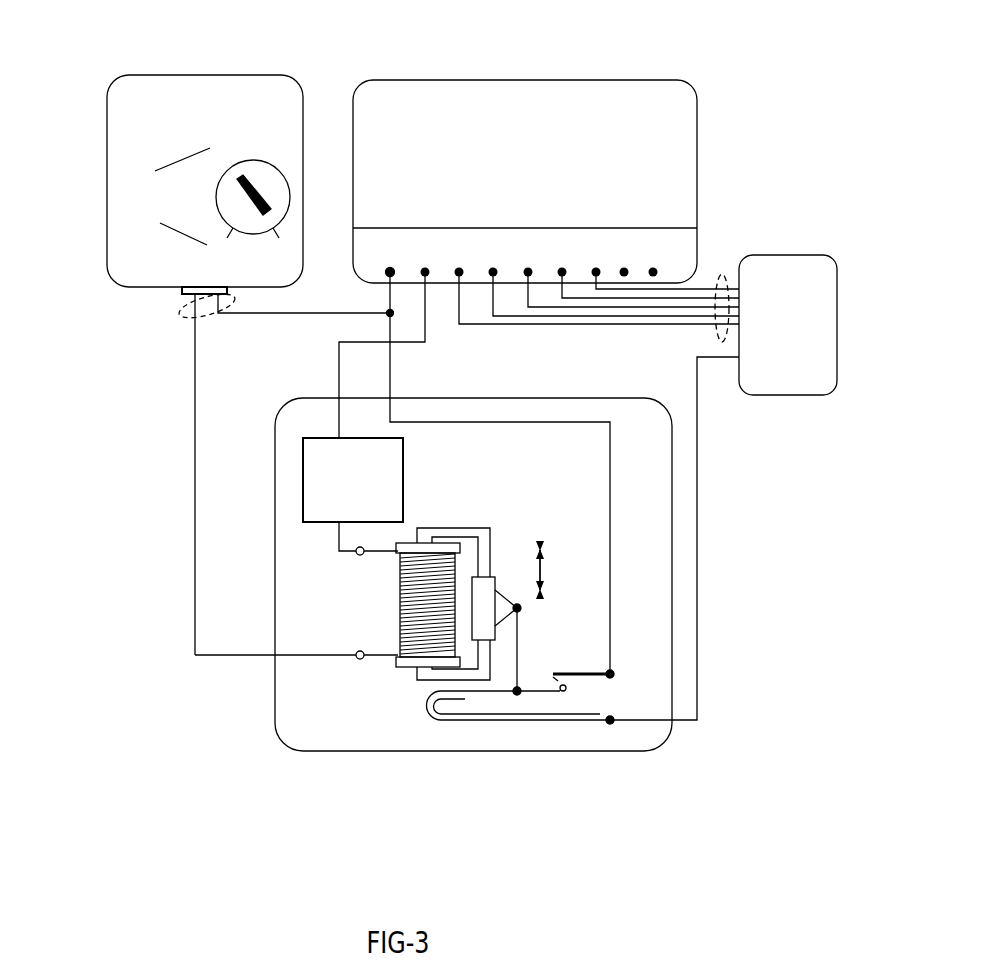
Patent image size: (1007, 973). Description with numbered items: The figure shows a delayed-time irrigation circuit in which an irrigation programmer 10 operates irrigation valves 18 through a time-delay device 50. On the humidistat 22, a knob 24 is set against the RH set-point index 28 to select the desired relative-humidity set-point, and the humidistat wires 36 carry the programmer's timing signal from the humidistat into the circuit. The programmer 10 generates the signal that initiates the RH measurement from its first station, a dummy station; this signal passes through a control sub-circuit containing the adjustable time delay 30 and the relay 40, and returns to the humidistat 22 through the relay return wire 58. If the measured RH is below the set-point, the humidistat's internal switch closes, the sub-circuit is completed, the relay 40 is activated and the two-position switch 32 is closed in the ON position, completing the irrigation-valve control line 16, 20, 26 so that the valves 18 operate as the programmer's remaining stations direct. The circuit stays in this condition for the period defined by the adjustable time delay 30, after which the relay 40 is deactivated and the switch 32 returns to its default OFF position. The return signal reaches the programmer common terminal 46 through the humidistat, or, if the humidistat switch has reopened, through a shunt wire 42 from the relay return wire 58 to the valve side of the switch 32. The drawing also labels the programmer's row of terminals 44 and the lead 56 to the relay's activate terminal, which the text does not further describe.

The irrigation programmer 10 is at (612, 78).
The irrigation-valve control line 16 is at (723, 272).
The irrigation valves 18 is at (805, 253).
The irrigation-valve control line 20 is at (698, 458).
The humidistat 22 is at (148, 76).
The knob 24 is at (266, 162).
The irrigation-valve control line 26 is at (528, 422).
The RH set-point index 28 is at (115, 178).
The adjustable time delay 30 is at (405, 480).
The two-position switch 32 is at (560, 672).
The humidistat wires 36 is at (172, 316).
The relay 40 is at (402, 603).
The shunt wire 42 is at (254, 178).
The terminal strip 44 is at (687, 242).
The programmer common terminal 46 is at (390, 268).
The time-delay device 50 is at (275, 585).
The activate wire 56 is at (338, 538).
The relay return wire 58 is at (193, 447).